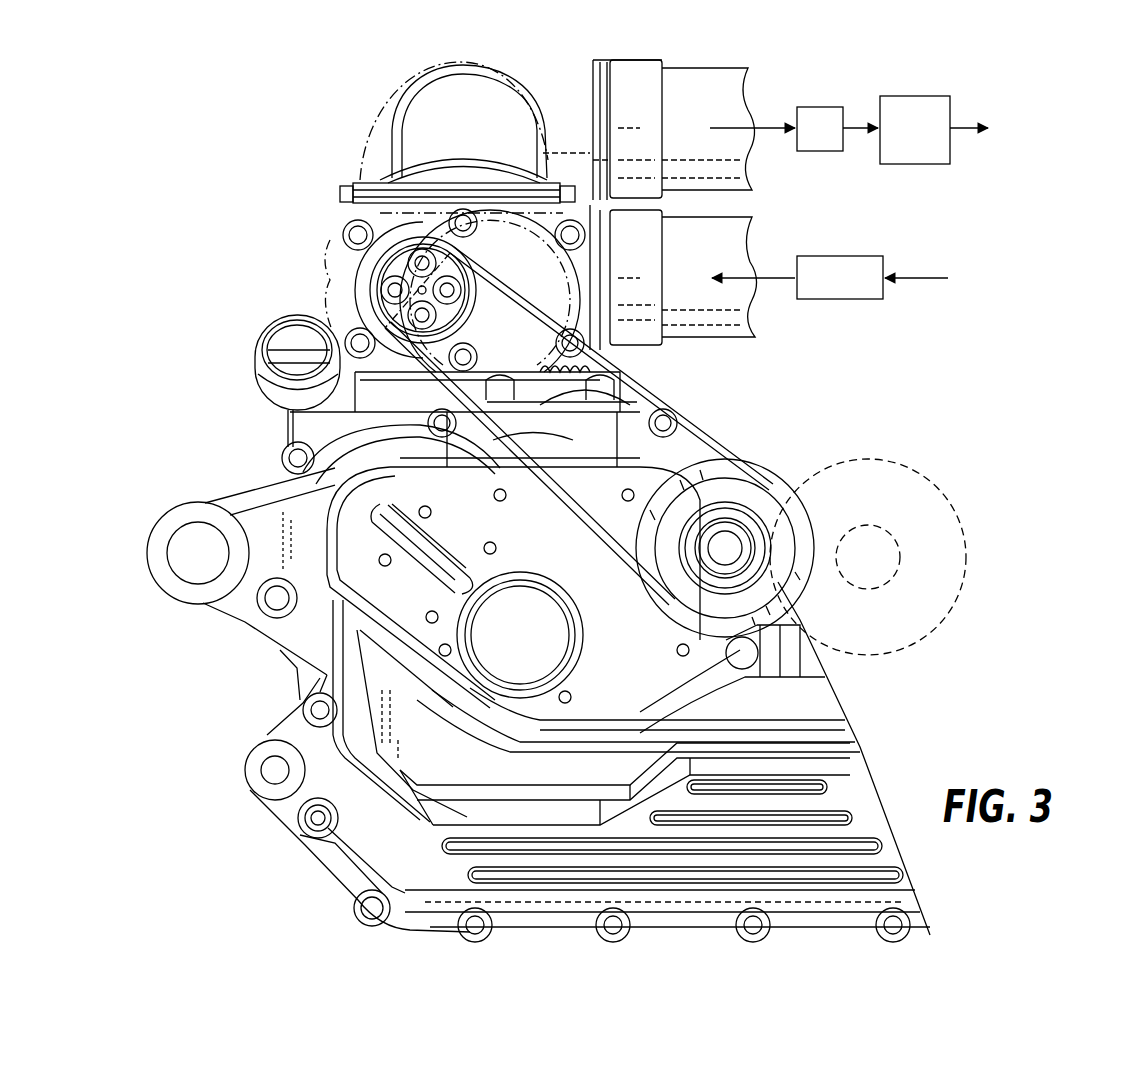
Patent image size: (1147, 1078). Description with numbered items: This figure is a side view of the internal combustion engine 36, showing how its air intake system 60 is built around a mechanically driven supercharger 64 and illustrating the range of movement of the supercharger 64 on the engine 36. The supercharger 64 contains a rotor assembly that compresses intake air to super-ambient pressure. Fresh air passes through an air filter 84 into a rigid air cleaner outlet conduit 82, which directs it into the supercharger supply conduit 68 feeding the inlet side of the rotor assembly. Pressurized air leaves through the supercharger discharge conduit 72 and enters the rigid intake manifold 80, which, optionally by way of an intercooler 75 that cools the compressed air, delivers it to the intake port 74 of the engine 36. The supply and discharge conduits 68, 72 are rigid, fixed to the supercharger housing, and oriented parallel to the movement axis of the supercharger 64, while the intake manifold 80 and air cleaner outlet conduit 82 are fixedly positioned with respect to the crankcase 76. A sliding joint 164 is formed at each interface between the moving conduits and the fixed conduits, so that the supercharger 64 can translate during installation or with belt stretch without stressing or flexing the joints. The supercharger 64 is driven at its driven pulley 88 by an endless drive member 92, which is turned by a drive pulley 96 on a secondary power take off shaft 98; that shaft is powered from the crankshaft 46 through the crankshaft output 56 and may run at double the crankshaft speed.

The internal combustion engine 36 is at (262, 135).
The crankshaft 46 is at (893, 532).
The crankshaft output 56 is at (967, 558).
The air intake system 60 is at (682, 50).
The supercharger 64 is at (383, 205).
The supercharger supply conduit 68 is at (623, 235).
The supercharger discharge conduit 72 is at (615, 114).
The intake port 74 is at (918, 95).
The intercooler 75 is at (818, 106).
The crankcase 76 is at (837, 708).
The intake manifold 80 is at (745, 80).
The air cleaner outlet conduit 82 is at (735, 325).
The air filter 84 is at (862, 300).
The driven pulley 88 is at (373, 283).
The endless drive member 92 is at (700, 418).
The drive pulley 96 is at (777, 487).
The secondary power take off shaft 98 is at (726, 543).
The sliding joint 164 is at (654, 241).